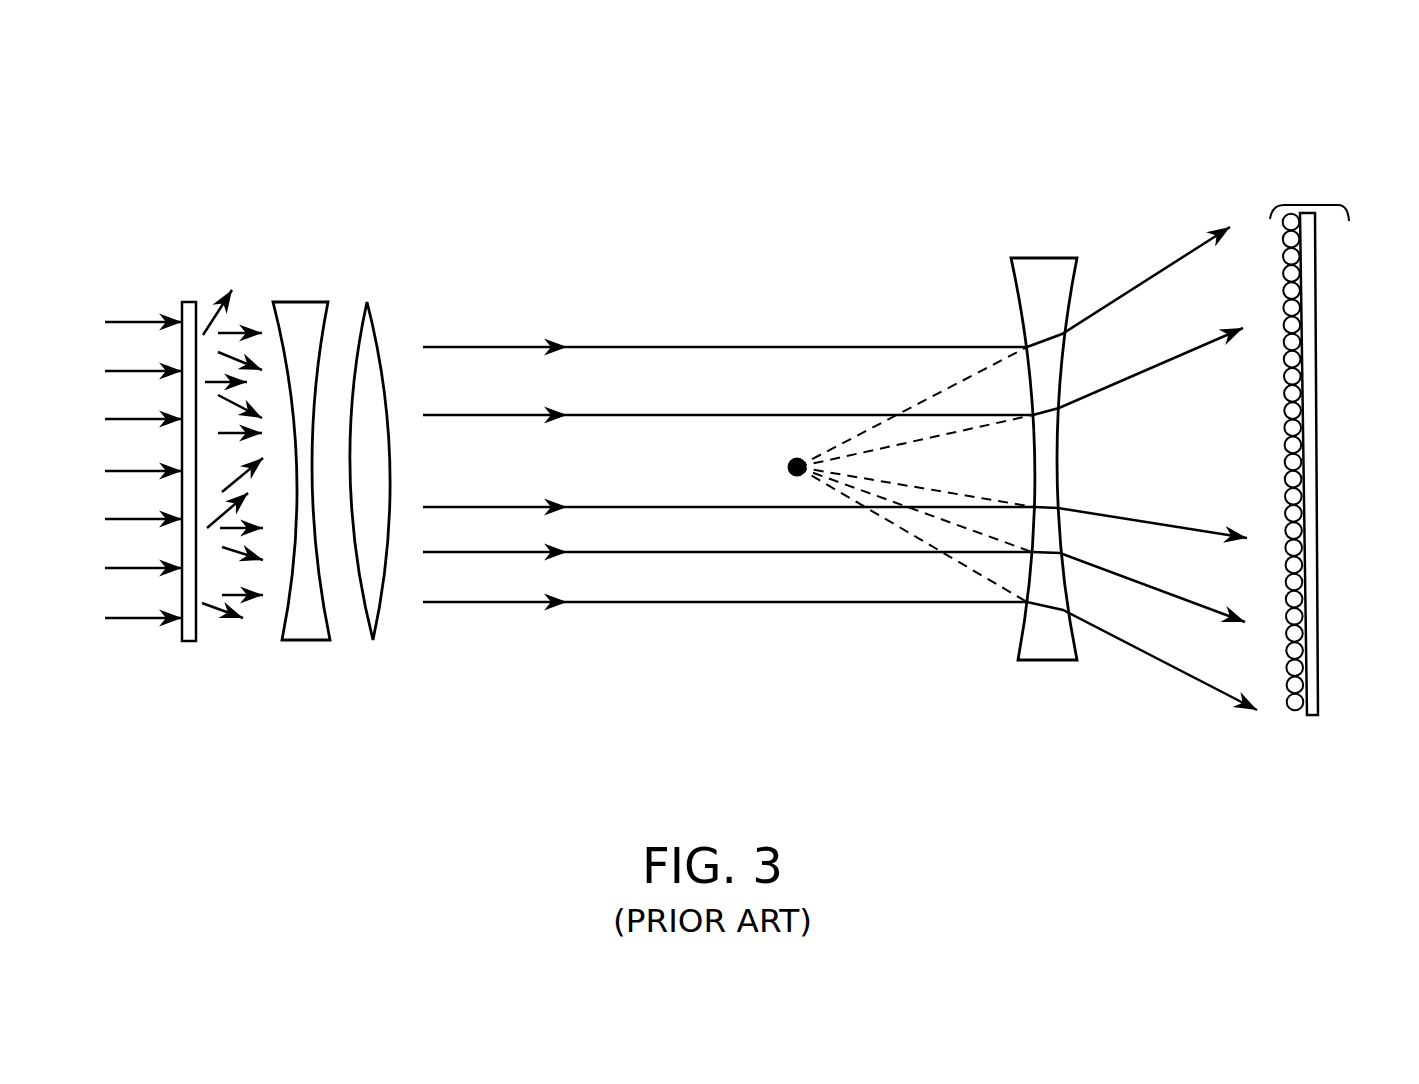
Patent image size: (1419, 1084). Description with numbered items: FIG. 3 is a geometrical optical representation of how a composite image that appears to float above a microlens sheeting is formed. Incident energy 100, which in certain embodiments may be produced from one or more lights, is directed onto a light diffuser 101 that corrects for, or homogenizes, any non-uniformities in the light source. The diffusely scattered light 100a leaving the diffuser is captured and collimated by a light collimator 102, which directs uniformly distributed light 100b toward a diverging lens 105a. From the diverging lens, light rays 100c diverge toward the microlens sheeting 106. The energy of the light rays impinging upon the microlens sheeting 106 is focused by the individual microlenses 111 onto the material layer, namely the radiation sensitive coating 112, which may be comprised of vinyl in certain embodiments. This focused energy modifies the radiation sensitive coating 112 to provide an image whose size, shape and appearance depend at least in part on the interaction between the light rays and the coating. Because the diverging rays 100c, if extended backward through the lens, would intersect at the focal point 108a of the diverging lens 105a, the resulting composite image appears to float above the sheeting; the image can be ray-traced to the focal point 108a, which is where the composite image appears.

The incident energy 100 is at (128, 316).
The light diffuser 101 is at (190, 642).
The light collimator 102 is at (367, 348).
The diffusely scattered light 100a is at (233, 630).
The uniformly distributed light 100b is at (800, 285).
The diverging lens 105a is at (1021, 233).
The diverging light rays 100c is at (1142, 268).
The focal point 108a is at (790, 477).
The microlenses 111 is at (1290, 213).
The microlens sheeting 106 is at (1350, 203).
The radiation sensitive coating 112 is at (1307, 720).